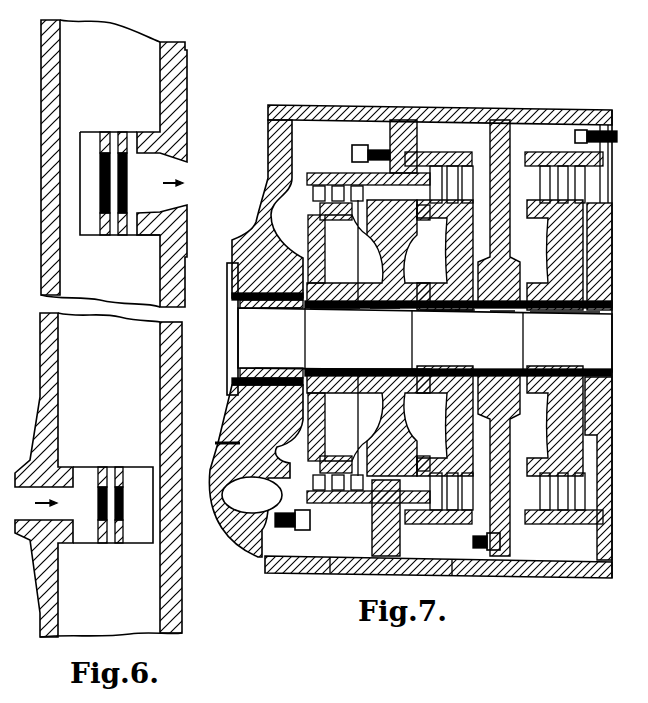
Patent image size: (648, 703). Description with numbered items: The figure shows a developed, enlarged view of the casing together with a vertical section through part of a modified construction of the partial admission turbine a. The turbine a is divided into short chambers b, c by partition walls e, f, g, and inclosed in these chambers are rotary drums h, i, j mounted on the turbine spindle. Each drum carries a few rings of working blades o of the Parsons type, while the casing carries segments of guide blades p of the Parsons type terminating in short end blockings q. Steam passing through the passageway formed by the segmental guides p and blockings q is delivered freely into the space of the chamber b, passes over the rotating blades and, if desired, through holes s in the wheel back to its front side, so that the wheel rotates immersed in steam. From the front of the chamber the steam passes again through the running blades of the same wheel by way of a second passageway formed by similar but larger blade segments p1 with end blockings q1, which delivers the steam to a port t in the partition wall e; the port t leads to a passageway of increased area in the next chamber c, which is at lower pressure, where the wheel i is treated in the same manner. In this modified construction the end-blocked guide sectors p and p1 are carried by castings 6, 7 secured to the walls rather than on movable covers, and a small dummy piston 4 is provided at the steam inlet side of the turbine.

In FIG. 7, the turbine a is at (258, 237).
In FIG. 7, the chamber b is at (270, 185).
In FIG. 7, the partition wall e is at (386, 120).
In FIG. 7, the partition wall f is at (500, 120).
In FIG. 7, the partition wall g is at (606, 145).
In FIG. 6, the port t is at (187, 193).
In FIG. 7, the port t is at (397, 183).
In FIG. 6, the guide blade segment p is at (123, 509).
In FIG. 7, the guide blade segment p is at (322, 502).
In FIG. 6, the larger blade segment p1 is at (127, 192).
In FIG. 7, the larger blade segment p1 is at (328, 152).
In FIG. 6, the end blocking q is at (103, 467).
In FIG. 7, the end blocking q is at (436, 185).
In FIG. 6, the end blocking q1 is at (121, 132).
In FIG. 7, the rings of blades o is at (335, 206).
In FIG. 7, the holes s is at (342, 262).
In FIG. 7, the casting 6 is at (456, 185).
In FIG. 7, the casting 7 is at (368, 308).
In FIG. 7, the dummy piston 4 is at (262, 308).
In FIG. 7, the rotary drum h is at (320, 308).
In FIG. 7, the chamber c is at (426, 310).
In FIG. 7, the wheel i is at (453, 310).
In FIG. 7, the rotary drum j is at (550, 312).